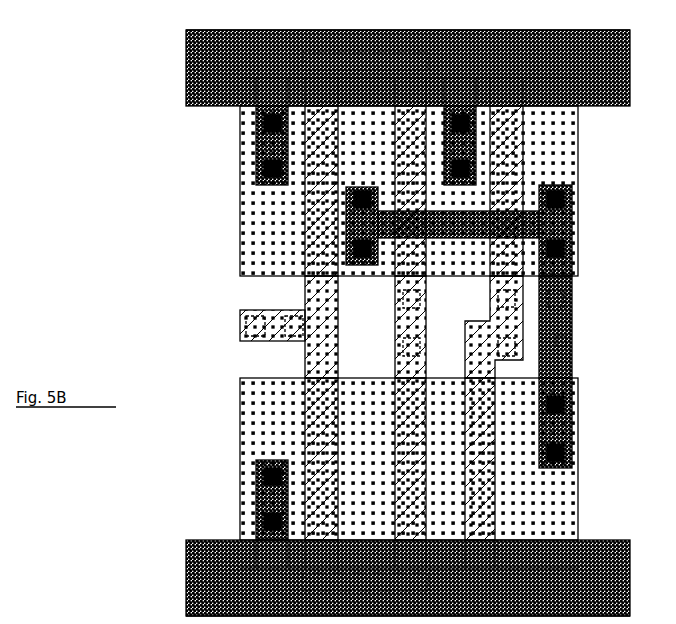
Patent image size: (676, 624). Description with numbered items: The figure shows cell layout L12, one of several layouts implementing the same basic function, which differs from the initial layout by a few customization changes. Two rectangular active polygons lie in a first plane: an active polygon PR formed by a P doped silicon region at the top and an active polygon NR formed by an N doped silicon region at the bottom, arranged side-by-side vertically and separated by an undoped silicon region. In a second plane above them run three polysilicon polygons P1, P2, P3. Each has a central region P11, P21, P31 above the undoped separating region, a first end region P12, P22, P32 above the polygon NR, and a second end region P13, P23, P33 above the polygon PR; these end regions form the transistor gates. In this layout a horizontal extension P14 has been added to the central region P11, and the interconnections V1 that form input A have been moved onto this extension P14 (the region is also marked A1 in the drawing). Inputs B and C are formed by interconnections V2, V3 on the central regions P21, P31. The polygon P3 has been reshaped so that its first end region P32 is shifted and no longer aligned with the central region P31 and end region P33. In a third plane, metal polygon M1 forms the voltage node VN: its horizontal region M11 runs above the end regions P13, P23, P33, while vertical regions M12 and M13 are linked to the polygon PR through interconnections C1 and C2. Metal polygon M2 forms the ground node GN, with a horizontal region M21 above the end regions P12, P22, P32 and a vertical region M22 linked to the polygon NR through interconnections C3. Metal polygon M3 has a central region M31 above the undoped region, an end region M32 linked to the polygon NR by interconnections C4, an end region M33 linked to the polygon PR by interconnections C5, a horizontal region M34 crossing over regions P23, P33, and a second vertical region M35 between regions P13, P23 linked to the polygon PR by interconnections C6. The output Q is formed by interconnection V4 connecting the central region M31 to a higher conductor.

The cell layout L12 is at (175, 111).
The metal polygon M1 is at (178, 78).
The first rectangular region of metal polygon M1 M11 is at (372, 61).
The voltage node VN is at (176, 29).
The metal polygon M2 is at (178, 562).
The first rectangular region of metal polygon M2 M21 is at (372, 582).
The ground node GN is at (176, 597).
The active polygon PR is at (232, 266).
The active polygon NR is at (232, 382).
The polysilicon polygon P1 is at (297, 352).
The central region of polygon P1 P11 is at (330, 327).
The first end region of polygon P1 P12 is at (330, 454).
The second end region of polygon P1 P13 is at (330, 197).
The horizontal extension P14 is at (262, 318).
The input region A1 is at (232, 320).
The interconnections V1 is at (250, 320).
The input A is at (254, 322).
The polysilicon polygon P2 is at (387, 316).
The central region of polygon P2 P21 is at (419, 327).
The first end region of polygon P2 P22 is at (419, 454).
The second end region of polygon P2 P23 is at (419, 197).
The interconnections V2 is at (395, 291).
The input B is at (395, 340).
The polysilicon polygon P3 is at (482, 314).
The central region of polygon P3 P31 is at (516, 327).
The first end region of polygon P3 P32 is at (488, 454).
The second end region of polygon P3 P33 is at (515, 197).
The interconnections V3 is at (490, 291).
The input C is at (490, 340).
The rectangular region of metal polygon M1 M12 is at (280, 142).
The interconnections C1 is at (256, 115).
The rectangular region of metal polygon M1 M13 is at (468, 142).
The interconnections C2 is at (462, 115).
The horizontal region of metal polygon M3 M34 is at (458, 224).
The second vertical region of metal polygon M3 M35 is at (362, 243).
The interconnections C6 is at (356, 250).
The metal polygon M3 is at (564, 317).
The end region of metal polygon M3 M33 is at (572, 230).
The interconnections C5 is at (556, 191).
The central region of metal polygon M3 M31 is at (571, 327).
The interconnection V4 is at (556, 291).
The output Q is at (556, 333).
The end region of metal polygon M3 M32 is at (572, 423).
The interconnections C4 is at (556, 396).
The rectangular region of metal polygon M2 M22 is at (280, 497).
The interconnections C3 is at (256, 470).